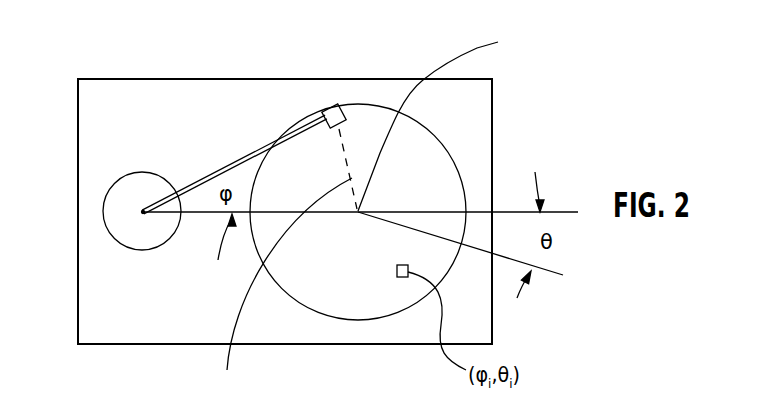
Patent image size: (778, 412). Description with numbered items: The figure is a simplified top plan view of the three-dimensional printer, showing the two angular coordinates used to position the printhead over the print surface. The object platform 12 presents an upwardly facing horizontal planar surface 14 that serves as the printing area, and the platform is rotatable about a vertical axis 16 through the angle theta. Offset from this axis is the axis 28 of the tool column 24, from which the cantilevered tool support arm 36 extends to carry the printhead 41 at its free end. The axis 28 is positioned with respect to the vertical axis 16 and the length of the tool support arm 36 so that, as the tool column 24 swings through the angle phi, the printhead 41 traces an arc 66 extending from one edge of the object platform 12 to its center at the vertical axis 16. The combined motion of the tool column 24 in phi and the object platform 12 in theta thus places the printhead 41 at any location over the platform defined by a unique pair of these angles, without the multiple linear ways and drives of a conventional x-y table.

The object platform 12 is at (448, 162).
The horizontal planar surface 14 is at (408, 153).
The vertical axis 16 is at (442, 120).
The tool column 24 is at (153, 173).
The axis 28 is at (143, 213).
The tool support arm 36 is at (220, 163).
The printhead 41 is at (345, 107).
The arc 66 is at (282, 287).